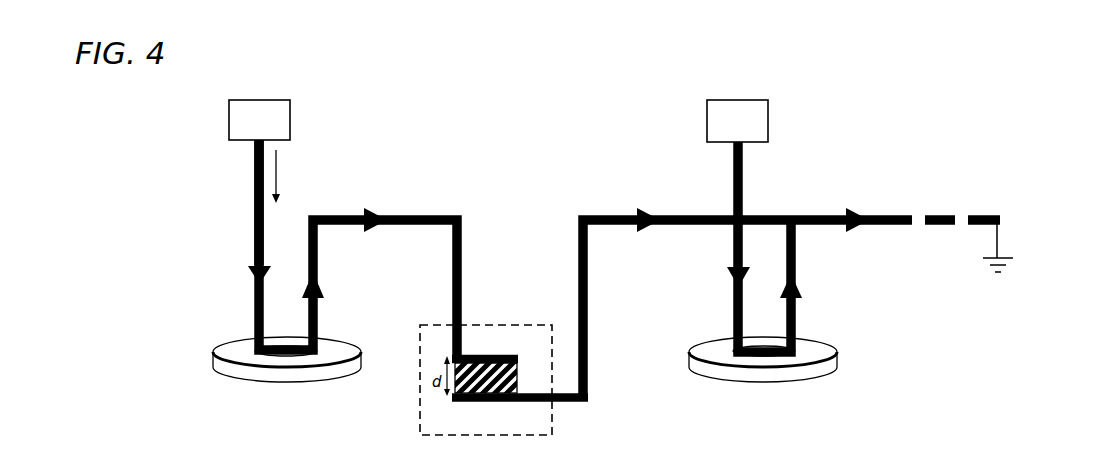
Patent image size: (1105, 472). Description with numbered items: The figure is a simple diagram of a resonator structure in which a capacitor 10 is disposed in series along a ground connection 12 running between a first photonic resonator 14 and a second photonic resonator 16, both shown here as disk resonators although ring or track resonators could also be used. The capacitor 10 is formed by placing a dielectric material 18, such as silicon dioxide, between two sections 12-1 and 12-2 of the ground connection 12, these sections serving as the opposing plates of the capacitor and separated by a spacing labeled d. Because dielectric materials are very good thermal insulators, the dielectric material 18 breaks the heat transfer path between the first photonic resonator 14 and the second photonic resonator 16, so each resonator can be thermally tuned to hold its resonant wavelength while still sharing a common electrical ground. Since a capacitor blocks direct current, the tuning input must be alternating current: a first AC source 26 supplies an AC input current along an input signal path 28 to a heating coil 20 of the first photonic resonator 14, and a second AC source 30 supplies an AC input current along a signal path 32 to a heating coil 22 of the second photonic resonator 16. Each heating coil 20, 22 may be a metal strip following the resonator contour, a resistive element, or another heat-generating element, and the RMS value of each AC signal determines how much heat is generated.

The capacitor 10 is at (552, 428).
The ground connection 12 is at (590, 268).
The section of ground connection 12-1 is at (481, 353).
The section of ground connection 12-2 is at (494, 402).
The first photonic resonator 14 is at (213, 352).
The second photonic resonator 16 is at (838, 360).
The dielectric material 18 is at (510, 382).
The heating coil 20 is at (278, 354).
The heating coil 22 is at (752, 354).
The first AC source 26 is at (229, 118).
The input signal path 28 is at (254, 210).
The AC source 30 is at (705, 118).
The signal path 32 is at (745, 186).